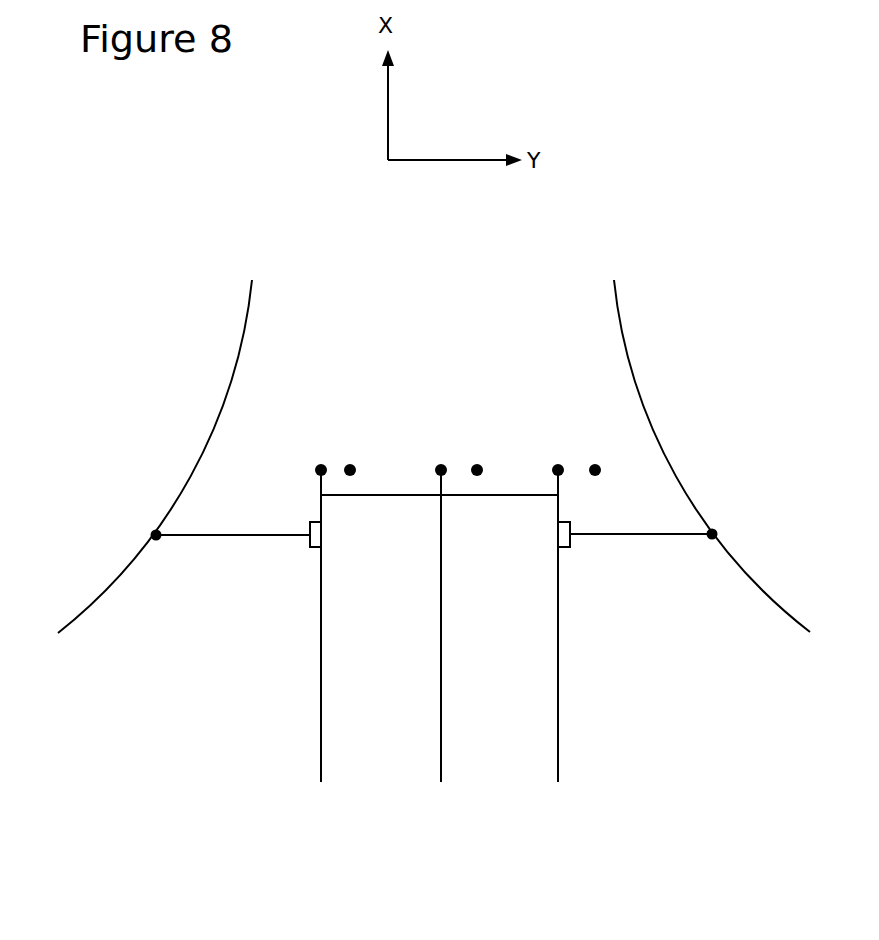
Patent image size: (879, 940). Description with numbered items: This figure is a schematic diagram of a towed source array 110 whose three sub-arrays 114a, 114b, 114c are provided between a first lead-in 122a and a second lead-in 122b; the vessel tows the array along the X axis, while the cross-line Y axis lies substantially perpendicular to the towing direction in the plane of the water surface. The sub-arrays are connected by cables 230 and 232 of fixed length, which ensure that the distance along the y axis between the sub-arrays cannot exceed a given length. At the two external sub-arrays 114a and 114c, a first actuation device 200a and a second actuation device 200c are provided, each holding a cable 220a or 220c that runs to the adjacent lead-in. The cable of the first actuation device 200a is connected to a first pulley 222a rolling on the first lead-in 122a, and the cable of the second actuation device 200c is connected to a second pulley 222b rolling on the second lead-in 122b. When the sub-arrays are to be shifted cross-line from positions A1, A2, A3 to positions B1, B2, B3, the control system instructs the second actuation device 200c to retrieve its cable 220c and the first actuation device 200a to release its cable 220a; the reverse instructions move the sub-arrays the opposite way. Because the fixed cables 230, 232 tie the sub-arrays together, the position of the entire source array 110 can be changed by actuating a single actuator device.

The source array 110 is at (452, 277).
The first lead-in 122a is at (213, 425).
The second lead-in 122b is at (632, 355).
The first pulley 222a is at (155, 530).
The second pulley 222b is at (715, 528).
The cable 220a is at (220, 537).
The cable 220c is at (663, 535).
The first actuation device 200a is at (307, 538).
The second actuation device 200c is at (570, 543).
The cable 230 is at (383, 493).
The cable 232 is at (507, 493).
The sub-array 114a is at (322, 690).
The sub-array 114b is at (440, 688).
The sub-array 114c is at (558, 692).
The position A1 is at (317, 467).
The position B1 is at (348, 465).
The position A2 is at (440, 467).
The position B2 is at (477, 466).
The position A3 is at (560, 465).
The position B3 is at (598, 465).